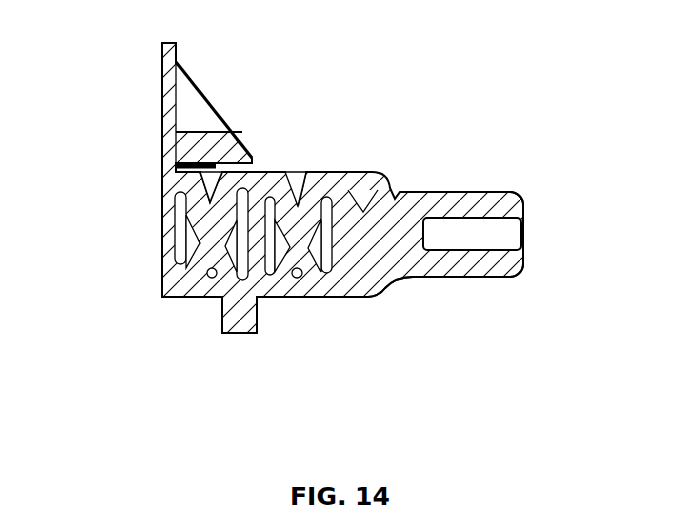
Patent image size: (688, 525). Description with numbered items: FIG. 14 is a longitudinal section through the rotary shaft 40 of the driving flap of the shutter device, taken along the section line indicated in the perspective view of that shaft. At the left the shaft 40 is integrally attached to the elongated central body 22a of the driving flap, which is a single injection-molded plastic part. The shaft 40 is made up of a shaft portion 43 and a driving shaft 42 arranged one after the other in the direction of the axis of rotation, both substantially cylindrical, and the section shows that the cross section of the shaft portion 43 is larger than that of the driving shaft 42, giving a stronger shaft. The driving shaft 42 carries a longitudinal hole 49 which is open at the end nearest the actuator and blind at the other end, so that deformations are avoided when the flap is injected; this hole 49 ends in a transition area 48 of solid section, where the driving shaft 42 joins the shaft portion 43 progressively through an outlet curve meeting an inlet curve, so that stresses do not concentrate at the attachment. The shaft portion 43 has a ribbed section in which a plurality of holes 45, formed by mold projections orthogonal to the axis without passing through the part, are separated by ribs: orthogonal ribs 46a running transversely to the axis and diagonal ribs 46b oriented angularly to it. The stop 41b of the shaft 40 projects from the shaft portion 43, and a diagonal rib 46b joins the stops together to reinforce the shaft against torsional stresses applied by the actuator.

The rotary shaft 40 is at (100, 85).
The central body 22a is at (162, 188).
The orthogonal ribs 46a is at (246, 195).
The diagonal ribs 46b is at (322, 190).
The transition area 48 is at (410, 233).
The driving shaft 42 is at (500, 182).
The longitudinal hole 49 is at (478, 233).
The holes 45 is at (363, 250).
The shaft portion 43 is at (325, 305).
The stop 41b is at (208, 320).